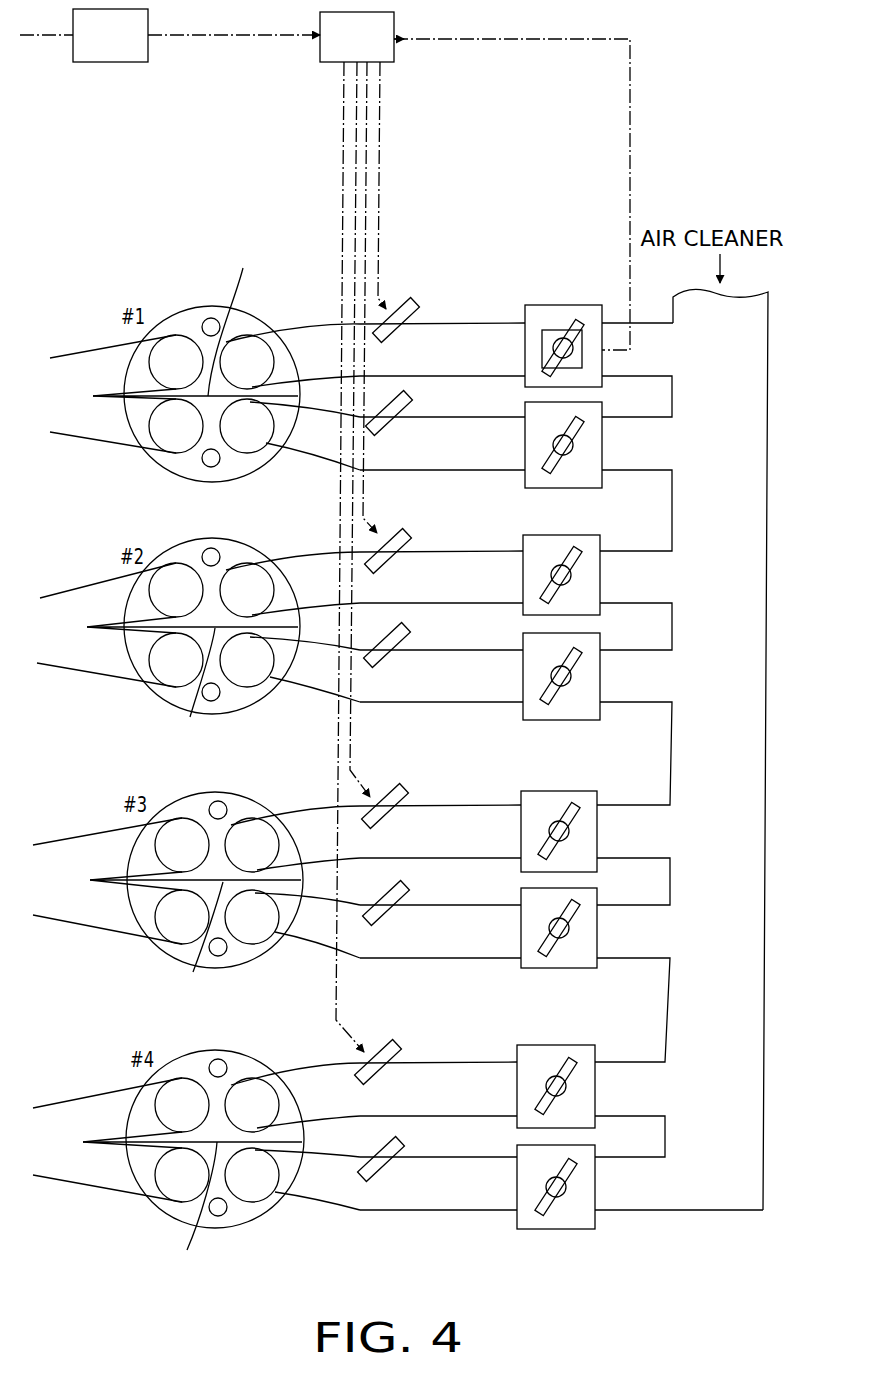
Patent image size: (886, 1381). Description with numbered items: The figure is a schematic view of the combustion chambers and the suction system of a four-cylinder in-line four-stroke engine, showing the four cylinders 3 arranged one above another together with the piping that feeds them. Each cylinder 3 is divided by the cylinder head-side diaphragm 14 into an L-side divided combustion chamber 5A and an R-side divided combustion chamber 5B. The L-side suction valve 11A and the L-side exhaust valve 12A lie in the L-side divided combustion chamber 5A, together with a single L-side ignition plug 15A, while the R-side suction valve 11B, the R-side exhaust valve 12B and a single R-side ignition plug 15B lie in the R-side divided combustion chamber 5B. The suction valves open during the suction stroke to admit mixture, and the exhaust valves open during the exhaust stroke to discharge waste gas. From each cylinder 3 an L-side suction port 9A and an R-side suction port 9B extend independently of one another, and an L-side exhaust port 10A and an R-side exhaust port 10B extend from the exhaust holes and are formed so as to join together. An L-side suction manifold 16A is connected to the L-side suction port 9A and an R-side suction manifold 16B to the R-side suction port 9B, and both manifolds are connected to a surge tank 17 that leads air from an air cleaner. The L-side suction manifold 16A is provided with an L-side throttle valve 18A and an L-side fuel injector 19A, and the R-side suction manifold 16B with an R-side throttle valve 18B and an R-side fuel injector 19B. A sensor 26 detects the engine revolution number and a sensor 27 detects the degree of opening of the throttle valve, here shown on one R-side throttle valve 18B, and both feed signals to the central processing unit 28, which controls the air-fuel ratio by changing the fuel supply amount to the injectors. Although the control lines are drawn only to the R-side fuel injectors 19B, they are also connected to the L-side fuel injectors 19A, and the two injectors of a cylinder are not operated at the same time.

The cylinder 3 is at (188, 307).
The L-side divided combustion chamber 5A is at (238, 467).
The R-side divided combustion chamber 5B is at (238, 318).
The L-side suction port 9A is at (312, 420).
The R-side suction port 9B is at (315, 327).
The L-side exhaust port 10A is at (112, 435).
The R-side exhaust port 10B is at (112, 352).
The L-side suction valve 11A is at (260, 433).
The R-side suction valve 11B is at (257, 350).
The L-side exhaust valve 12A is at (168, 443).
The R-side exhaust valve 12B is at (173, 352).
The cylinder head-side diaphragm 14 is at (212, 759).
The L-side ignition plug 15A is at (208, 470).
The R-side ignition plug 15B is at (210, 318).
The L-side suction manifold 16A is at (453, 427).
The R-side suction manifold 16B is at (465, 333).
The surge tank 17 is at (670, 990).
The L-side throttle valve 18A is at (602, 403).
The R-side throttle valve 18B is at (565, 305).
The L-side fuel injector 19A is at (405, 398).
The R-side fuel injector 19B is at (408, 300).
The sensor for detecting an engine revolution number 26 is at (130, 63).
The sensor for detecting a degree of opening of a throttle valve 27 is at (550, 335).
The central processing unit 28 is at (380, 63).